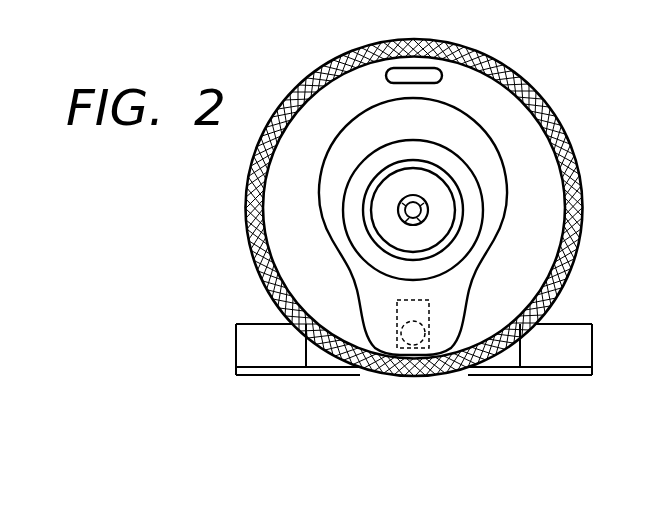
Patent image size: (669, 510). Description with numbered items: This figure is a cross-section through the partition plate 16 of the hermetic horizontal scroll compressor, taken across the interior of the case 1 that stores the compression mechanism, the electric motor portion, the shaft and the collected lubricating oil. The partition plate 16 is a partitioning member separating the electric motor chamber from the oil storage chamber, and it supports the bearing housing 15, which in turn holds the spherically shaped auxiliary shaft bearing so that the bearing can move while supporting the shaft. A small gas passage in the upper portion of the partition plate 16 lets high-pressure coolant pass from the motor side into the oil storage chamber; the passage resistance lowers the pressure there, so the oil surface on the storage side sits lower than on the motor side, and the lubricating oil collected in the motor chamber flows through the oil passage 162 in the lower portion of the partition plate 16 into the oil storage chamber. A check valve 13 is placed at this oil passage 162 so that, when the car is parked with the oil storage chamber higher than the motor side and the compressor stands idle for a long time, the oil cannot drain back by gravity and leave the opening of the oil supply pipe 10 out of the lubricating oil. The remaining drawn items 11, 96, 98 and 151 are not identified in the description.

The case 1 is at (513, 66).
The oil supply pipe 10 is at (425, 218).
The motor 11 is at (388, 208).
The check valve 13 is at (397, 305).
The bearing housing 15 is at (390, 172).
The partition plate 16 is at (515, 135).
The mounting plate 96 is at (510, 197).
The base 98 is at (262, 367).
The slot 151 is at (413, 68).
The oil passage 162 is at (430, 323).